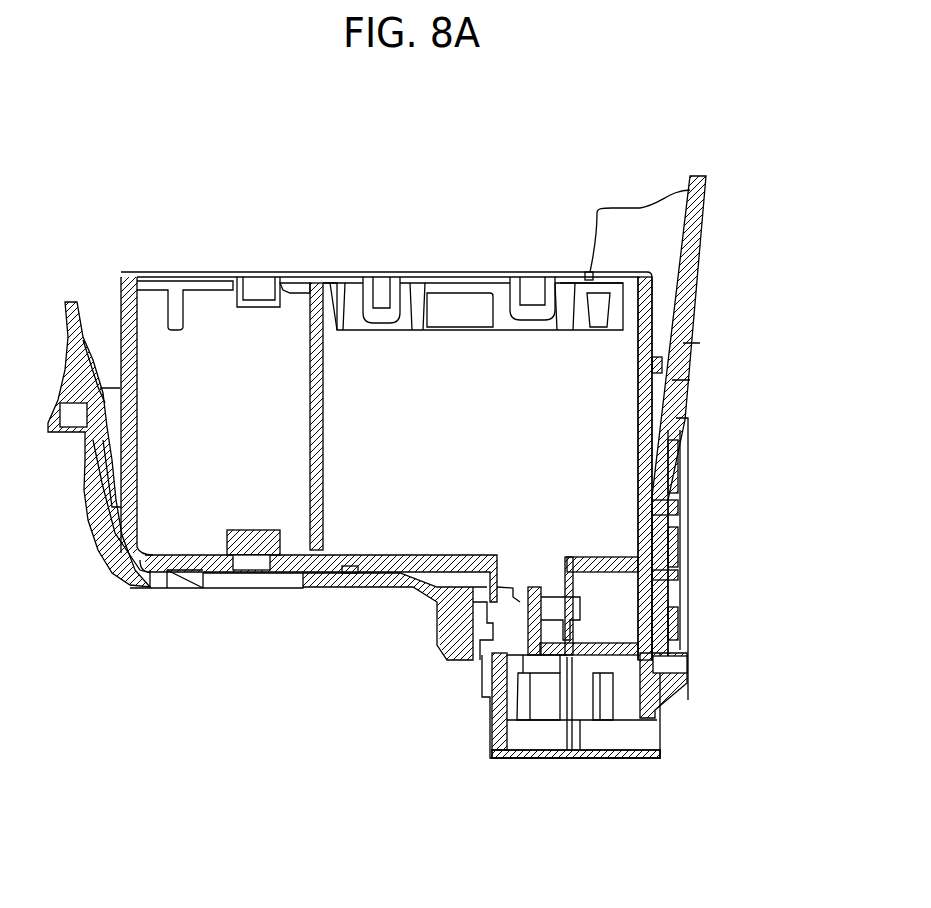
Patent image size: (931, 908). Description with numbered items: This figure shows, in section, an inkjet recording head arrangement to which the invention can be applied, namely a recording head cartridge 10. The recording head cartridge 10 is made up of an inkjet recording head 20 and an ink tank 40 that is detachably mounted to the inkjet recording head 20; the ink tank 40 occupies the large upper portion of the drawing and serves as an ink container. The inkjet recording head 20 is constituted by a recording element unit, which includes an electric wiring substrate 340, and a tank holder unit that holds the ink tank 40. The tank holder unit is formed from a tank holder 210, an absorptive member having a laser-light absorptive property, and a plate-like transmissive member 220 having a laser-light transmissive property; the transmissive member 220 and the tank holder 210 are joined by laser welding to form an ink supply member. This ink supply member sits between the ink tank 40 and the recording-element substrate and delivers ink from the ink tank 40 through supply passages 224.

The recording head cartridge 10 is at (442, 188).
The ink tank 40 is at (208, 268).
The tank holder 210 is at (698, 256).
The inkjet recording head 20 is at (710, 592).
The transmissive member 220 is at (563, 707).
The supply passages 224 is at (560, 660).
The electric wiring substrate 340 is at (632, 758).